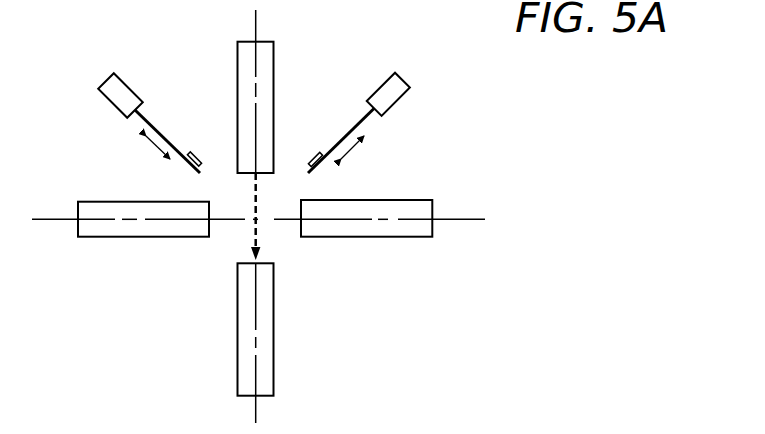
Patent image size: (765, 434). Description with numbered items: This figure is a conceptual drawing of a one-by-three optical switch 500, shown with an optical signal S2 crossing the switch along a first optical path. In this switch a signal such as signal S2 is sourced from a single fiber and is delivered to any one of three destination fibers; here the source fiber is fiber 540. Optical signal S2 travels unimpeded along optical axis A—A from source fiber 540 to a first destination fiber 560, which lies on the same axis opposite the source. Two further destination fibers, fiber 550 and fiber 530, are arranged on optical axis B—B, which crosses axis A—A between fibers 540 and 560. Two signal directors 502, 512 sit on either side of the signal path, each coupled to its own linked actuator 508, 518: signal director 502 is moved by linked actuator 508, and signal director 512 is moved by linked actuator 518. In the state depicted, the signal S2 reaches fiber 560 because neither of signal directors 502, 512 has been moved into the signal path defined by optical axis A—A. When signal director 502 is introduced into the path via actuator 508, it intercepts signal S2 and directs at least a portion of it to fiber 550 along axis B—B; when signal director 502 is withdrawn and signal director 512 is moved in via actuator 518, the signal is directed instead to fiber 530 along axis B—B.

The optical switch 500 is at (603, 85).
The signal director 502 is at (197, 157).
The linked actuator 508 is at (125, 78).
The signal director 512 is at (318, 155).
The linked actuator 518 is at (408, 80).
The fiber 530 is at (98, 238).
The source fiber 540 is at (274, 72).
The fiber 550 is at (388, 238).
The first destination fiber 560 is at (274, 360).
The optical signal S2 is at (253, 234).